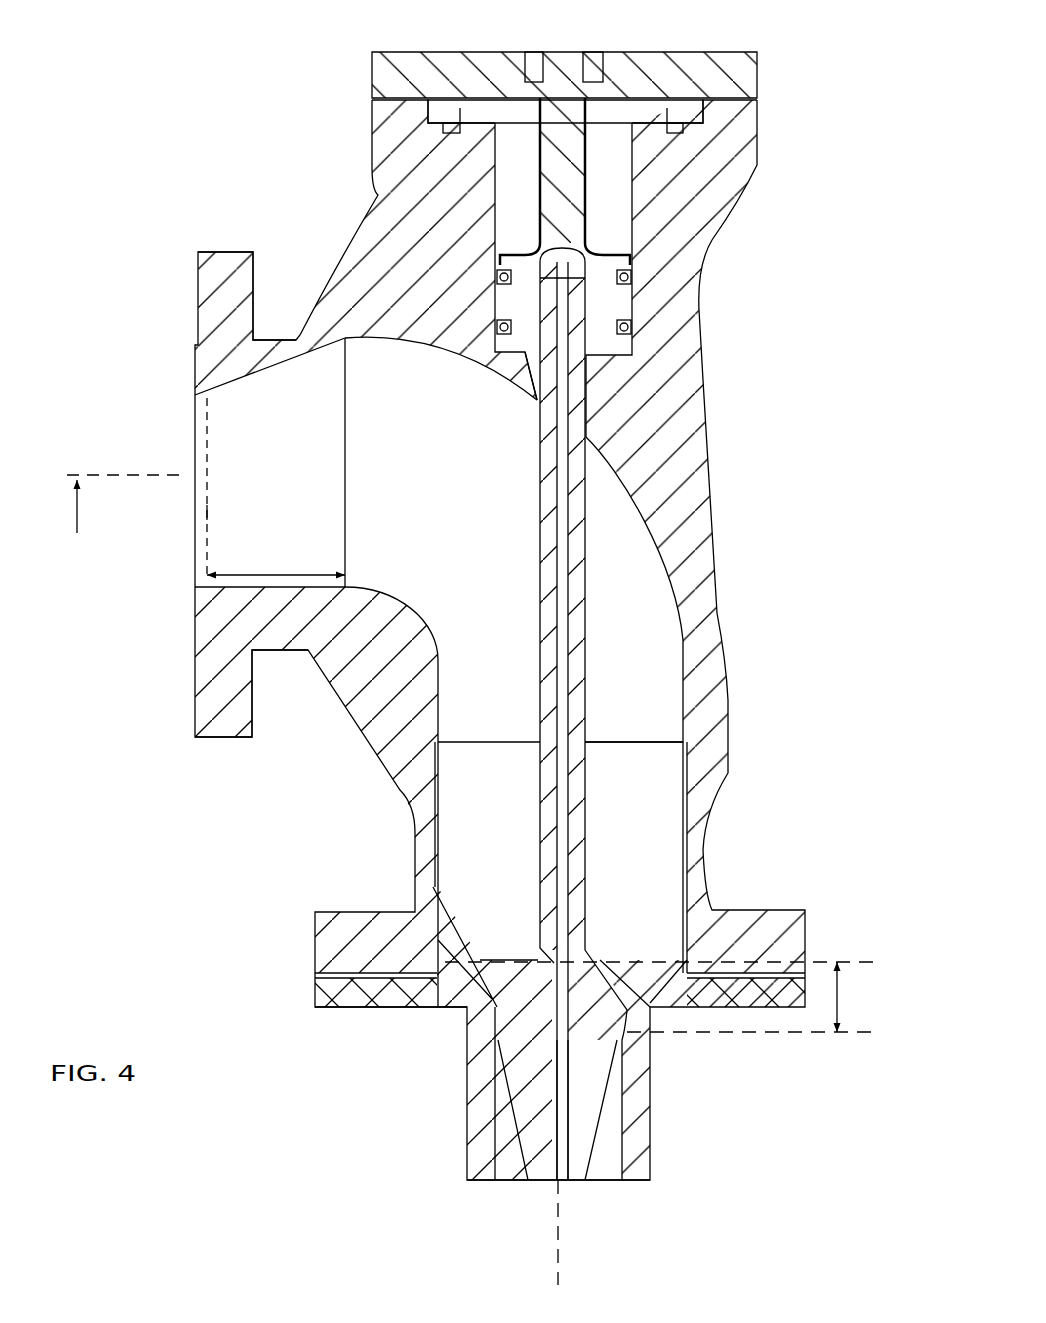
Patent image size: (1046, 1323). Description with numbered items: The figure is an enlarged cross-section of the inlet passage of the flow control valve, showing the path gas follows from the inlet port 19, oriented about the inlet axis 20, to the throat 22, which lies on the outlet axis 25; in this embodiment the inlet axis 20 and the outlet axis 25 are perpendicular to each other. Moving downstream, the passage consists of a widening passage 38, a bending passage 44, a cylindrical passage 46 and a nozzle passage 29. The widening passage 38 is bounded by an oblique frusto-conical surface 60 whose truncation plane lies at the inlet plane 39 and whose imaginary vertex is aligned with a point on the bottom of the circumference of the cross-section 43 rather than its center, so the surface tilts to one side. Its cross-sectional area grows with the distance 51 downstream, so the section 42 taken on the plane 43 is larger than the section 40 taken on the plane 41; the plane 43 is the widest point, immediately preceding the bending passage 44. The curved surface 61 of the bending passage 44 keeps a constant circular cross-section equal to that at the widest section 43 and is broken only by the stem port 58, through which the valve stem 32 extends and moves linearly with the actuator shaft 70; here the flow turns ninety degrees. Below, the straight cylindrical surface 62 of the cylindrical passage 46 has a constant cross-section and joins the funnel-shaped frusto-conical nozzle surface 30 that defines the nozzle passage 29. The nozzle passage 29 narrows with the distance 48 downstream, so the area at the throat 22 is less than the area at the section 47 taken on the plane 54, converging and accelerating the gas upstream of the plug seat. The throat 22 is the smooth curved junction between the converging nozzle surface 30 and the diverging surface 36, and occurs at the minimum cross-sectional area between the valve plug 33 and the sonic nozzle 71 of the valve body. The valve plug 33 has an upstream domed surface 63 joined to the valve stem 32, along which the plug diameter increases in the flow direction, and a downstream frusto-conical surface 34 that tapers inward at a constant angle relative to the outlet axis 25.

The inlet port 19 is at (192, 403).
The inlet axis 20 is at (123, 518).
The throat 22 is at (525, 1042).
The outlet axis 25 is at (560, 1268).
The nozzle passage 29 is at (641, 958).
The nozzle surface 30 is at (437, 908).
The valve stem 32 is at (575, 627).
The valve plug 33 is at (577, 1085).
The frusto-conical surface 34 is at (597, 1158).
The outwardly diverging angled surface 36 is at (520, 1168).
The widening passage 38 is at (270, 526).
The inlet plane 39 is at (190, 563).
The section 40 is at (207, 404).
The plane 41 is at (207, 505).
The section 42 is at (347, 337).
The cross-section 43 is at (347, 515).
The bending passage 44 is at (420, 609).
The cylindrical passage 46 is at (634, 788).
The section 47 is at (650, 955).
The distance 48 is at (838, 997).
The distance 51 is at (313, 572).
The plane 54 is at (828, 962).
The stem port 58 is at (537, 401).
The oblique frusto-conical surface 60 is at (278, 367).
The curved surface 61 is at (415, 347).
The cylindrical surface 62 is at (437, 837).
The domed surface 63 is at (498, 1003).
The actuator shaft 70 is at (566, 97).
The sonic nozzle 71 is at (437, 1007).